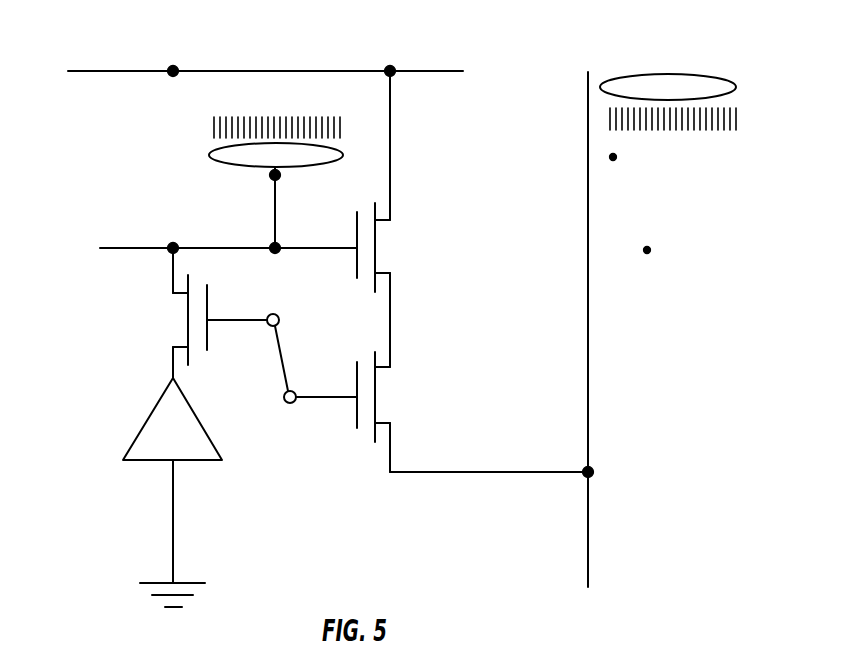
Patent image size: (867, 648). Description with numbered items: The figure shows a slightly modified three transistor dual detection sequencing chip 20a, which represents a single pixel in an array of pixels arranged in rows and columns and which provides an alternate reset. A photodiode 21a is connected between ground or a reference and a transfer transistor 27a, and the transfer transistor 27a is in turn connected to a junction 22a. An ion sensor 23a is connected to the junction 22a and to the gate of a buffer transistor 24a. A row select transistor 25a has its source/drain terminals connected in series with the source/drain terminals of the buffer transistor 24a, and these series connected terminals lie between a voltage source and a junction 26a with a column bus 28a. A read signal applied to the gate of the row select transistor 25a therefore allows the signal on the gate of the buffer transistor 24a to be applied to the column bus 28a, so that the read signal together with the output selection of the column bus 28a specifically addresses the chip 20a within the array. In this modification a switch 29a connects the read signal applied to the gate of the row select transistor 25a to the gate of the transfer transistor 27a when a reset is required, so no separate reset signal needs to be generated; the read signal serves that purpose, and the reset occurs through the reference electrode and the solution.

The three transistor chip 20a is at (527, 27).
The photodiode 21a is at (132, 447).
The junction 22a is at (166, 245).
The ion sensor 23a is at (160, 165).
The buffer transistor 24a is at (386, 242).
The row select transistor 25a is at (365, 430).
The junction 26a is at (598, 470).
The transfer transistor 27a is at (173, 327).
The column bus 28a is at (590, 265).
The switch 29a is at (277, 355).